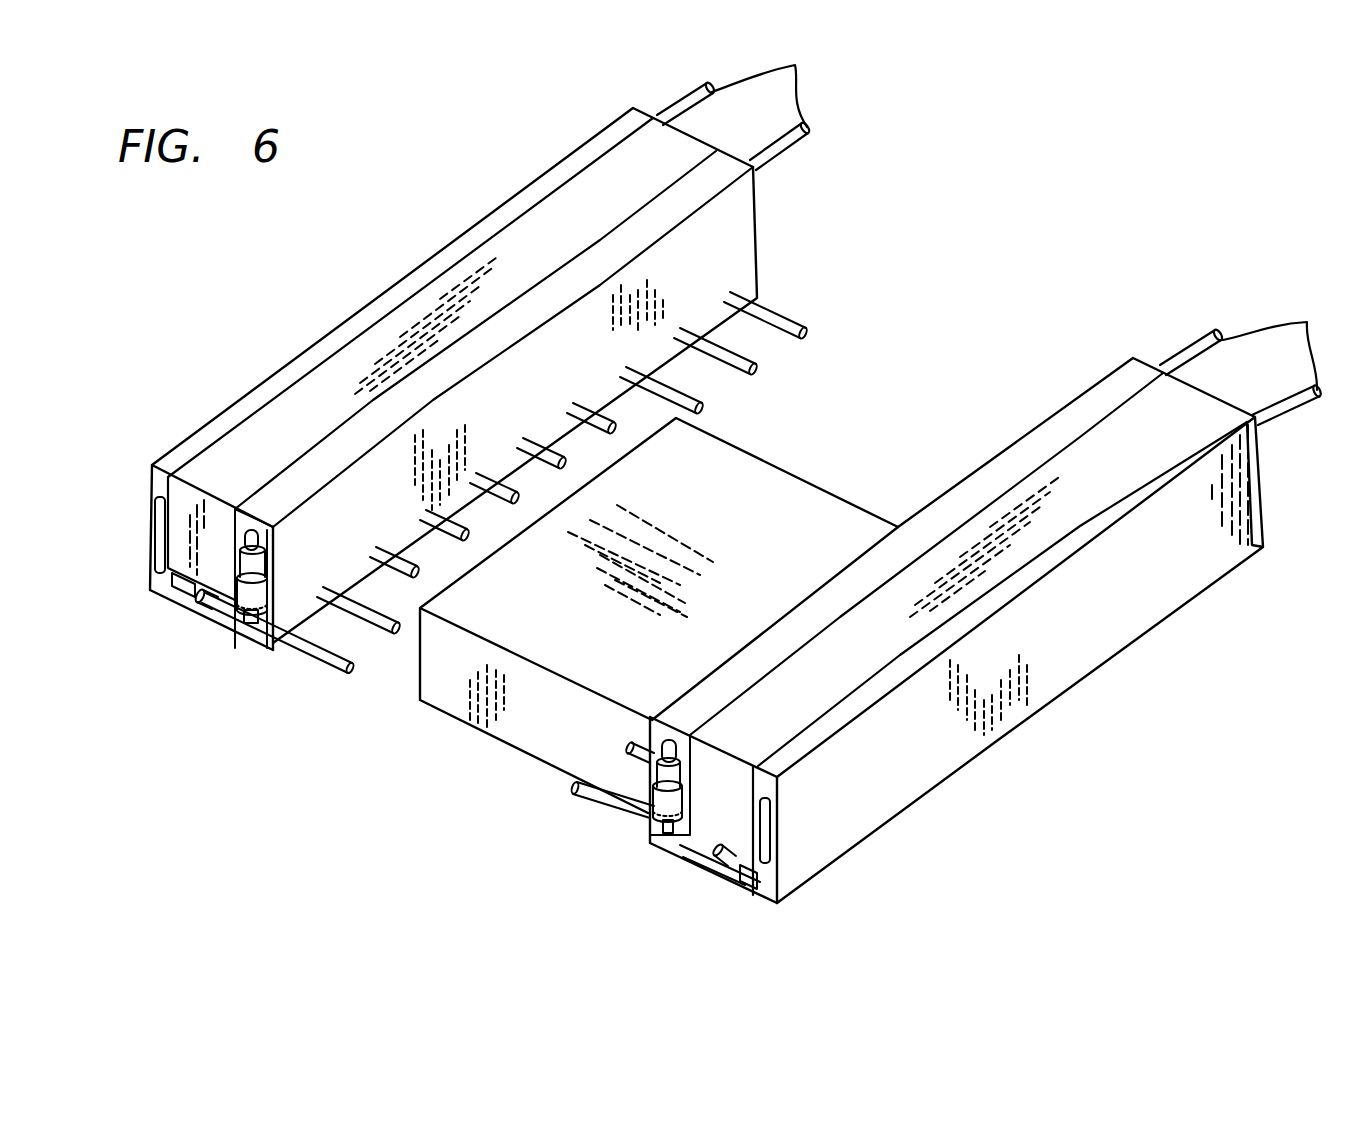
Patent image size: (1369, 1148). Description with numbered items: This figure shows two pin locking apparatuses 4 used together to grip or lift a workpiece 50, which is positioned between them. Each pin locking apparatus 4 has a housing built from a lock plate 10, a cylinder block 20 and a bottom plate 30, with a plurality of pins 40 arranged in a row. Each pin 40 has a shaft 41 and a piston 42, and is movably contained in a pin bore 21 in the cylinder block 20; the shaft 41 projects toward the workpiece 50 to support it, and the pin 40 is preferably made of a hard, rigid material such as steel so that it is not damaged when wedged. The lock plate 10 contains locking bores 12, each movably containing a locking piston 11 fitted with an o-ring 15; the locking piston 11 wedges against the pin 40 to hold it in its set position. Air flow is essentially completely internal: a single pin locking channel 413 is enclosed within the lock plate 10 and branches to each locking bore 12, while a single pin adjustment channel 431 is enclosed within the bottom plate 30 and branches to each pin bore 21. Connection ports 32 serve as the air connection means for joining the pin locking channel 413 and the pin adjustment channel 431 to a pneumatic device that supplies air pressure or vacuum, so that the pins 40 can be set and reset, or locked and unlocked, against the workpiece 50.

The pin locking apparatus 4 is at (365, 241).
The lock plate 10 is at (340, 448).
The locking piston 11 is at (253, 584).
The locking bore 12 is at (250, 560).
The o-ring 15 is at (253, 635).
The cylinder block 20 is at (277, 432).
The pin bore 21 is at (173, 590).
The bottom plate 30 is at (203, 433).
The connection port 32 is at (1004, 238).
The pin 40 is at (288, 677).
The shaft 41 is at (330, 670).
The piston 42 is at (195, 607).
The workpiece 50 is at (788, 497).
The pin locking channel 413 is at (250, 532).
The pin adjustment channel 431 is at (155, 527).